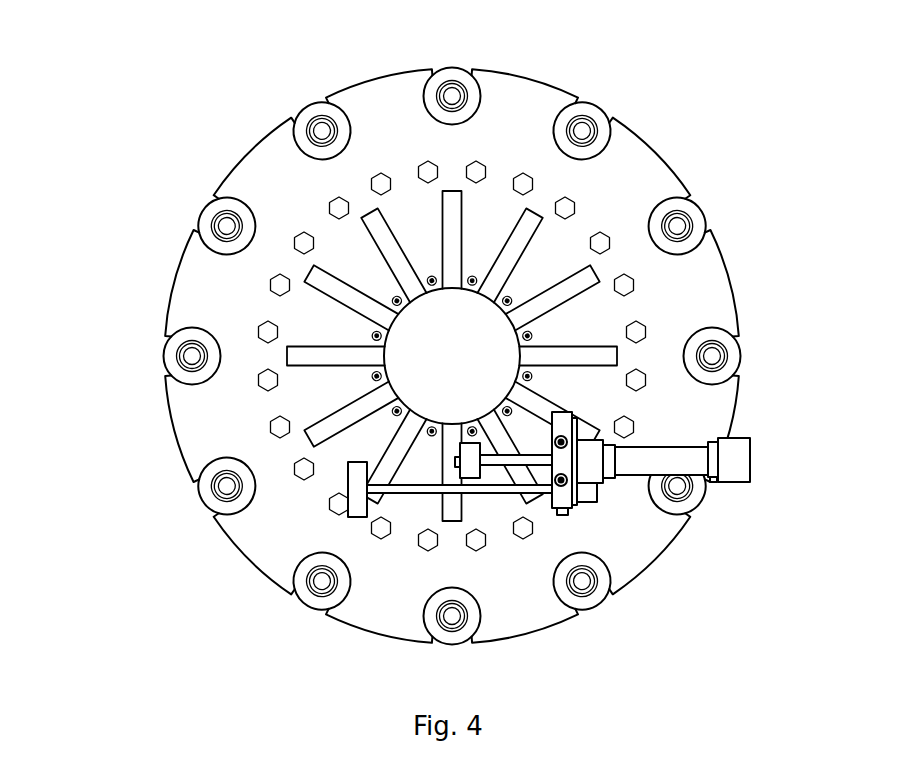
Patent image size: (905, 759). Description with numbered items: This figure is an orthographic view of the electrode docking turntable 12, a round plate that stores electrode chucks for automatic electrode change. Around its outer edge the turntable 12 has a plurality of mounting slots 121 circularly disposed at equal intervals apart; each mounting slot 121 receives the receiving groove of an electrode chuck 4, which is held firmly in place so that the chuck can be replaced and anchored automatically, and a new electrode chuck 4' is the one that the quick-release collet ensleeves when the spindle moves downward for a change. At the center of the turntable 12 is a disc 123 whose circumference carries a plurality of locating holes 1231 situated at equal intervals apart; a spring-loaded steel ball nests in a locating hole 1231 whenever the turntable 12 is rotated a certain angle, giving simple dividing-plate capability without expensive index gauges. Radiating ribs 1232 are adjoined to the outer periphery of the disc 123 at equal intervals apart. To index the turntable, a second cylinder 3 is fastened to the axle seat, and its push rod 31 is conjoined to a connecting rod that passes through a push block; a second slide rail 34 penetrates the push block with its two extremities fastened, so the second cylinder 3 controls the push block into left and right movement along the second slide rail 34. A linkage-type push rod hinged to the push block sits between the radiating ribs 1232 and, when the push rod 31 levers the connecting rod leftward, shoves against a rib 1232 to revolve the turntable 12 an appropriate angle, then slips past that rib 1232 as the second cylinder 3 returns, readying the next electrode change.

The electrode docking turntable 12 is at (635, 157).
The mounting slot 121 is at (688, 197).
The electrode chuck 4 is at (452, 349).
The new electrode chuck 4' is at (435, 62).
The disc 123 is at (397, 292).
The locating hole 1231 is at (447, 278).
The radiating rib 1232 is at (530, 213).
The second cylinder 3 is at (735, 457).
The push rod 31 is at (520, 462).
The second slide rail 34 is at (422, 490).